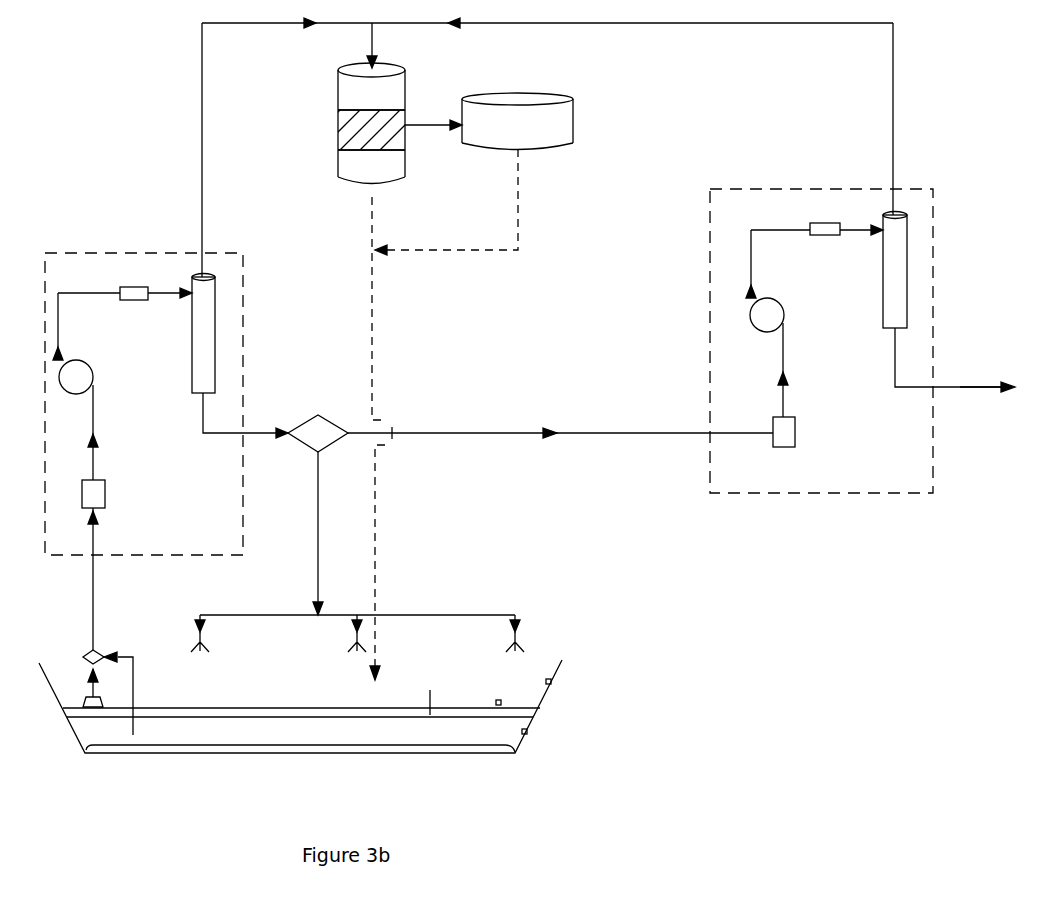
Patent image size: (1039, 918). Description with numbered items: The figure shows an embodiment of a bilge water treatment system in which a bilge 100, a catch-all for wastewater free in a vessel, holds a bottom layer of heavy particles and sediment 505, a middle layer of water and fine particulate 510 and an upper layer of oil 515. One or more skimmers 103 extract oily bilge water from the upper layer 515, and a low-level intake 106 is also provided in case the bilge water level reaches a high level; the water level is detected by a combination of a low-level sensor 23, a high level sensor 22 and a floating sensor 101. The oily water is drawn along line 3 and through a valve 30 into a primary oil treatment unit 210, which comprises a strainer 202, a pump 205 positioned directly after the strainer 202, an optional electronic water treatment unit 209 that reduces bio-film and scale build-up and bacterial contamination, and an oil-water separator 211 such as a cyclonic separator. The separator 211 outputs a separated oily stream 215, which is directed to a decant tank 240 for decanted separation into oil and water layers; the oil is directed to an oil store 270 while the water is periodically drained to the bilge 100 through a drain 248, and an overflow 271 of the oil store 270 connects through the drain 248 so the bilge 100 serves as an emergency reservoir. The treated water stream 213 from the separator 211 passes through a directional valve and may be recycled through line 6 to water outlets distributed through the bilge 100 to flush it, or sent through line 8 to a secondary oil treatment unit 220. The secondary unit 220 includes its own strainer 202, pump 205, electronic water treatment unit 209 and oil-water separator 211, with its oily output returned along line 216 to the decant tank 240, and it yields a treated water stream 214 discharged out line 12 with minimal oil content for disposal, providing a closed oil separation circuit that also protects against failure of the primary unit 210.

The feed stream 3 is at (86, 579).
The line 6 is at (306, 533).
The line 8 is at (560, 446).
The line 12 is at (981, 401).
The high level sensor 22 is at (552, 681).
The low-level sensor 23 is at (528, 733).
The valve 30 is at (100, 650).
The bilge 100 is at (586, 725).
The floating sensor 101 is at (500, 700).
The skimmer 103 is at (87, 702).
The low-level intake 106 is at (135, 695).
The strainer 202 is at (105, 497).
The pump 205 is at (93, 377).
The electronic water treatment unit 209 is at (130, 287).
The oil treatment unit 210 is at (88, 230).
The oil-water separator 211 is at (206, 330).
The treated water stream 213 is at (245, 424).
The treated water stream 214 is at (934, 360).
The separated oily stream 215 is at (223, 150).
The recycle line 216 is at (915, 119).
The secondary oil treatment unit 220 is at (781, 160).
The decant tank 240 is at (318, 76).
The drain 248 is at (359, 438).
The oil store 270 is at (517, 121).
The overflow 271 is at (471, 202).
The bottom layer of heavy particles and sediment 505 is at (412, 748).
The middle layer of water and fine particulate 510 is at (352, 160).
The upper layer of oil 515 is at (356, 128).